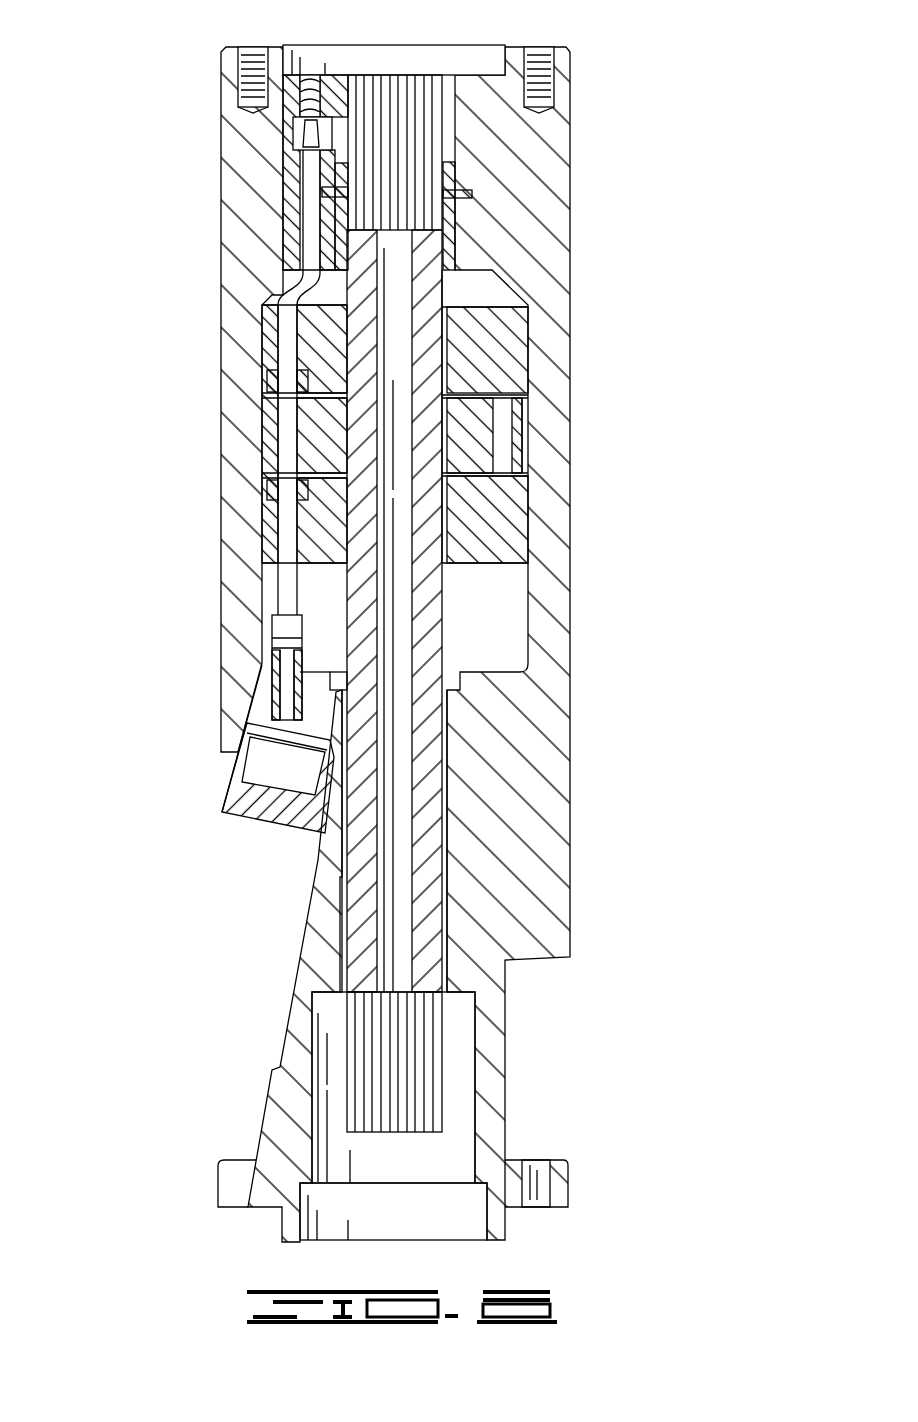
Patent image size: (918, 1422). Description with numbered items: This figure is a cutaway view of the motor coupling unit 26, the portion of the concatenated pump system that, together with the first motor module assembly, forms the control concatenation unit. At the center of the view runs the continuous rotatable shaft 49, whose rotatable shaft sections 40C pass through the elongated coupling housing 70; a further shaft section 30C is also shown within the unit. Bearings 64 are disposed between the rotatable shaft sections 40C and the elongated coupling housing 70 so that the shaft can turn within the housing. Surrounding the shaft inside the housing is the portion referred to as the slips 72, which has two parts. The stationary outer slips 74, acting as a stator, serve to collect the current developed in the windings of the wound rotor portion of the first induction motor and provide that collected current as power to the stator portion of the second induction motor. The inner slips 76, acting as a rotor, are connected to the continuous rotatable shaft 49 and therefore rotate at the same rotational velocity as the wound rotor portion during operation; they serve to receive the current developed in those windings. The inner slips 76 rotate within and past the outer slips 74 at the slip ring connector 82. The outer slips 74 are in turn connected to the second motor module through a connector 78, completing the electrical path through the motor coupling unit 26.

The motor coupling unit 26 is at (188, 70).
The continuous rotatable shaft 49 is at (420, 75).
The connector 78 is at (300, 157).
The bearings 64 is at (450, 215).
The rotatable shaft section 30C is at (283, 300).
The inner slips (rotor) 76 is at (310, 415).
The slips 72 is at (527, 420).
The slip ring connector 82 is at (283, 477).
The stationary outer slips (stator) 74 is at (305, 548).
The rotatable shaft sections 40C is at (362, 913).
The elongated coupling housing 70 is at (571, 912).